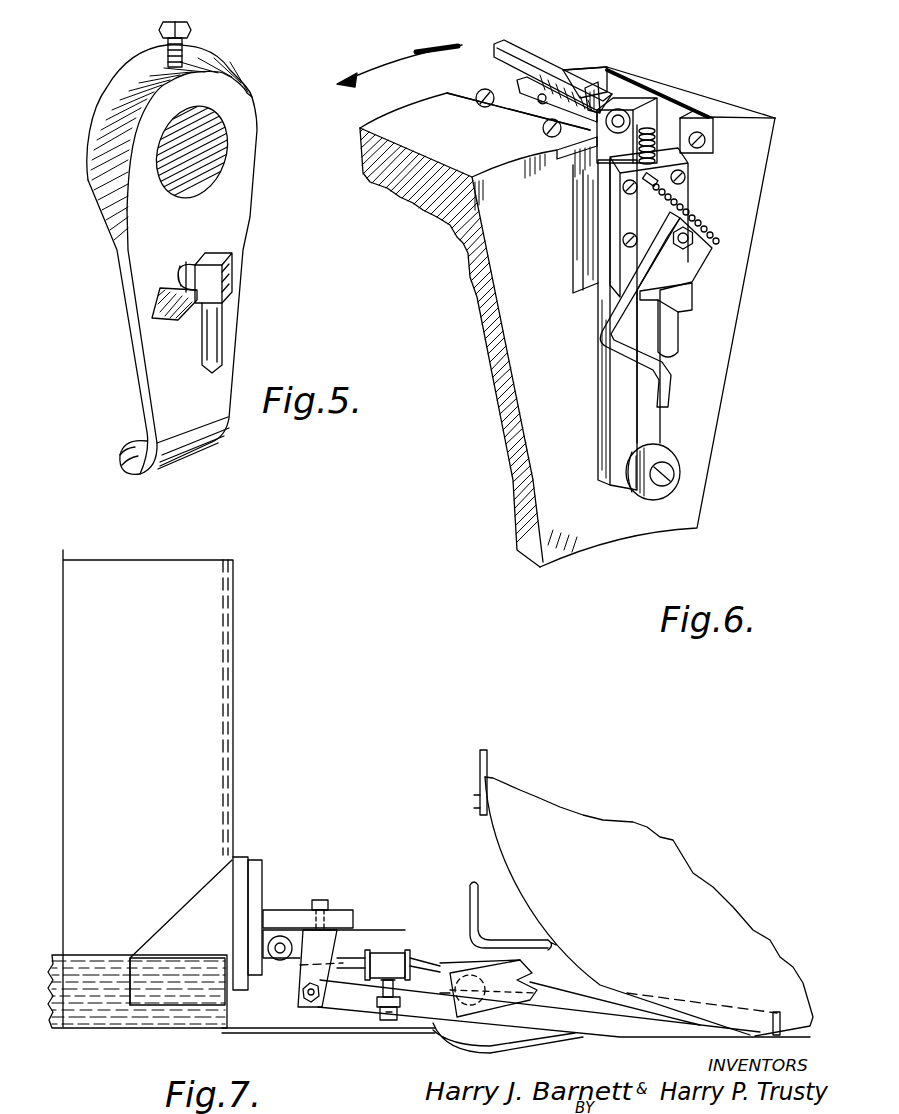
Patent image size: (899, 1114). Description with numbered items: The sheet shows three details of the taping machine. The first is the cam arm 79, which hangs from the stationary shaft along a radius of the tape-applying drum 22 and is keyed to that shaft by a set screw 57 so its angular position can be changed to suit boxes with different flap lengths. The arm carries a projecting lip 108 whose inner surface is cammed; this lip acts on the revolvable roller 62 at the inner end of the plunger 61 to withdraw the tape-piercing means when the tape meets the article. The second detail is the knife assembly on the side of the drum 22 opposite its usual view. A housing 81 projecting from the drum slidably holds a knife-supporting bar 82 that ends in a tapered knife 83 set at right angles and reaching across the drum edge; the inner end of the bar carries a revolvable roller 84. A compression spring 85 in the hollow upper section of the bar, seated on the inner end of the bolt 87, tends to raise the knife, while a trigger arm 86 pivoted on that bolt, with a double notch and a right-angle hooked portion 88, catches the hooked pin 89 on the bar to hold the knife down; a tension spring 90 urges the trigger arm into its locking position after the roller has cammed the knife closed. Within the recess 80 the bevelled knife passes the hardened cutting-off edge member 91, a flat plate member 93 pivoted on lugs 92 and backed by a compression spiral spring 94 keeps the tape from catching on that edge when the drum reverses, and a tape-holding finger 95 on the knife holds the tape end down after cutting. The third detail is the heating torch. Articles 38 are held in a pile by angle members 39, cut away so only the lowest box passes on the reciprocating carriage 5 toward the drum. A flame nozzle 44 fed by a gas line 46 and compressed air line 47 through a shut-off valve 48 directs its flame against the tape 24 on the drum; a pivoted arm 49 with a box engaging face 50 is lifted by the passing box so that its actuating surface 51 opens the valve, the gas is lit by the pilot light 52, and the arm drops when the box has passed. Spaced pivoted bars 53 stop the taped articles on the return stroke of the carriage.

In FIG. 5, the set screw 57 is at (192, 30).
In FIG. 5, the cam arm 79 is at (145, 290).
In FIG. 5, the revolvable roller 62 is at (190, 262).
In FIG. 5, the plunger 61 is at (214, 327).
In FIG. 5, the projecting lip 108 is at (180, 320).
In FIG. 6, the recess 80 is at (522, 96).
In FIG. 6, the cutting-off edge member 91 is at (465, 97).
In FIG. 6, the compression spiral spring 94 is at (540, 97).
In FIG. 6, the knife 83 is at (545, 72).
In FIG. 6, the flat plate member 93 is at (590, 74).
In FIG. 6, the tape-holding finger 95 is at (600, 100).
In FIG. 6, the compression spring 85 is at (660, 125).
In FIG. 6, the tape-applying drum 22 is at (748, 112).
In FIG. 7, the tape-applying drum 22 is at (694, 874).
In FIG. 6, the lugs 92 is at (715, 136).
In FIG. 6, the tension spring 90 is at (700, 211).
In FIG. 6, the bolt 87 is at (692, 250).
In FIG. 6, the trigger arm 86 is at (688, 266).
In FIG. 6, the hooked pin 89 is at (683, 330).
In FIG. 6, the hooked portion 88 is at (670, 396).
In FIG. 6, the revolvable roller 84 is at (680, 476).
In FIG. 6, the housing 81 is at (590, 245).
In FIG. 6, the knife-supporting bar 82 is at (613, 406).
In FIG. 7, the angle members 39 is at (230, 713).
In FIG. 7, the articles 38 is at (103, 1006).
In FIG. 7, the pivoted bars 53 is at (295, 960).
In FIG. 7, the gas line 46 is at (356, 960).
In FIG. 7, the compressed air line 47 is at (392, 950).
In FIG. 7, the actuating surface 51 is at (395, 994).
In FIG. 7, the shut-off valve 48 is at (383, 983).
In FIG. 7, the pivoted arm 49 is at (350, 1005).
In FIG. 7, the carriage 5 is at (636, 1034).
In FIG. 7, the flame nozzle 44 is at (470, 961).
In FIG. 7, the pilot light 52 is at (546, 942).
In FIG. 7, the box engaging face 50 is at (560, 1046).
In FIG. 7, the tape 24 is at (487, 753).